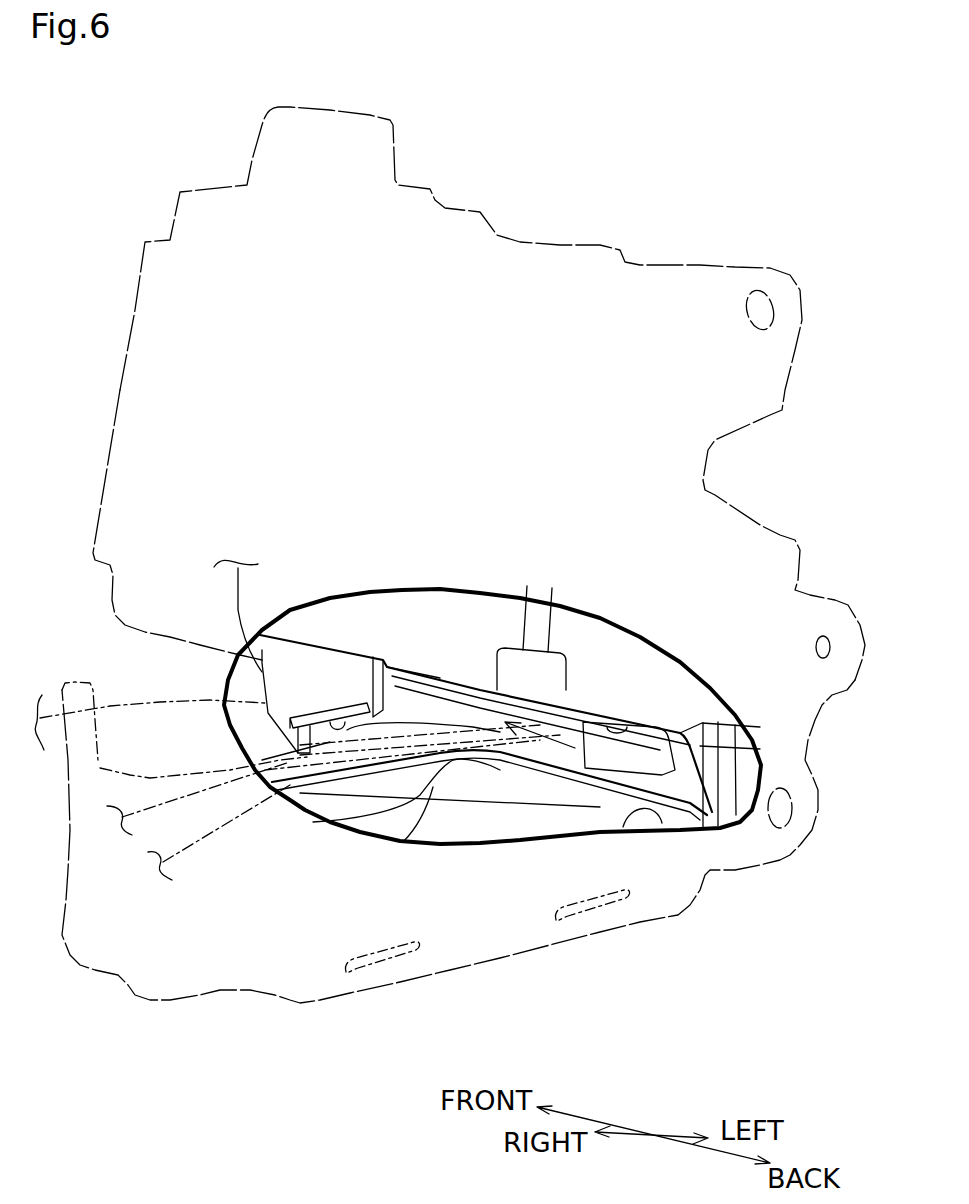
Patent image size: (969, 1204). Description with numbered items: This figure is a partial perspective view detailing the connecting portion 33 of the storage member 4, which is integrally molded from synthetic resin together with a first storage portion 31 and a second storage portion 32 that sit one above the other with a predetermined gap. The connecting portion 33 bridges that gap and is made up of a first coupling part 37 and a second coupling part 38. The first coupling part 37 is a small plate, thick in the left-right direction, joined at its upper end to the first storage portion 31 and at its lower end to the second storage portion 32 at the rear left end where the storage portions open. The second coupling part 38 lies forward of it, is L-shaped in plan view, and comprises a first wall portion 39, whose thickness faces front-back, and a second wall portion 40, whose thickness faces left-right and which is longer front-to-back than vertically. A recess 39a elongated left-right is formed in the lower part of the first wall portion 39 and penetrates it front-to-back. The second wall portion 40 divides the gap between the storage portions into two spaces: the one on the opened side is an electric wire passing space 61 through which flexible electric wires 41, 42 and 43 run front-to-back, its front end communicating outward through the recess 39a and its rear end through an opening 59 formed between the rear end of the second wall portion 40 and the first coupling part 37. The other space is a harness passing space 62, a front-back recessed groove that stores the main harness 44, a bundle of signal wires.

The storage member 4 is at (762, 130).
The first storage portion 31 is at (118, 338).
The second storage portion 32 is at (104, 983).
The connecting portion 33 is at (662, 481).
The first coupling part 37 is at (712, 735).
The second coupling part 38 is at (472, 529).
The first wall portion 39 is at (320, 690).
The recess 39a is at (340, 723).
The second wall portion 40 is at (447, 707).
The electric wire 41 is at (238, 610).
The electric wire 42 is at (222, 814).
The electric wire 43 is at (145, 830).
The main harness 44 is at (120, 700).
The opening 59 is at (627, 727).
The electric wire passing space 61 is at (527, 735).
The harness passing space 62 is at (263, 723).